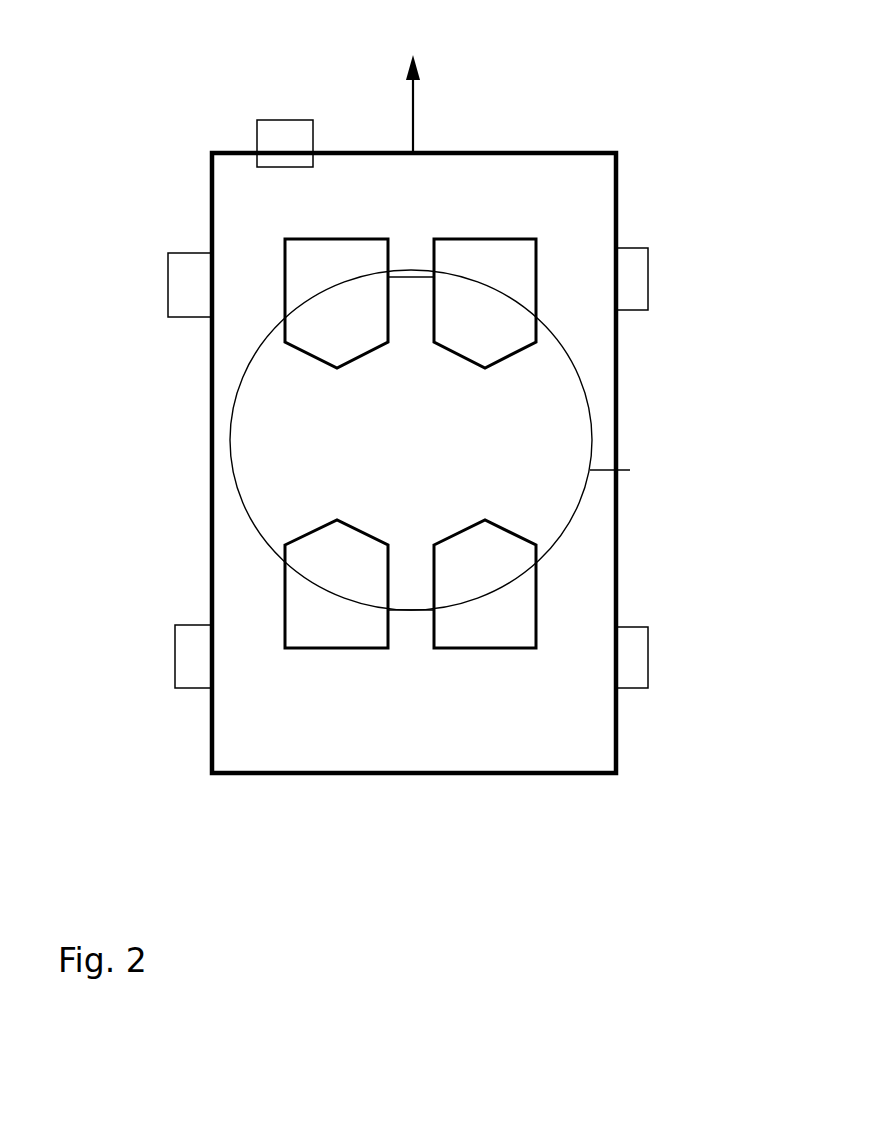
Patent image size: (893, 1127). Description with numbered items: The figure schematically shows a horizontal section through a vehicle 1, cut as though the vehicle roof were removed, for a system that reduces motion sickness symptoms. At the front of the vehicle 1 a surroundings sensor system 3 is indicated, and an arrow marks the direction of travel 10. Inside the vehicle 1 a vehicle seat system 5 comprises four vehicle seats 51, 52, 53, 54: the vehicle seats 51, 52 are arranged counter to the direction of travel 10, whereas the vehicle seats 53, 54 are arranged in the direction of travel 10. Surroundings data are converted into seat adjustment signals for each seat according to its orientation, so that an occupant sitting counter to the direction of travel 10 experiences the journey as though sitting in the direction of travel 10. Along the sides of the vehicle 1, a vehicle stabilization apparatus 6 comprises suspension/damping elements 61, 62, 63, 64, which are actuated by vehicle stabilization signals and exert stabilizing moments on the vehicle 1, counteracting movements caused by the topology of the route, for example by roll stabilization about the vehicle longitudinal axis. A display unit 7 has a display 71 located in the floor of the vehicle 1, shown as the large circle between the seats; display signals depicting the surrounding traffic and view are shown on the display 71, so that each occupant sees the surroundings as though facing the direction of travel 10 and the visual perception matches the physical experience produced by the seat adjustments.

The vehicle 1 is at (415, 773).
The surroundings sensor system 3 is at (287, 120).
The vehicle seat system 5 is at (600, 240).
The vehicle stabilization apparatus 6 is at (662, 346).
The display unit 7 is at (600, 530).
The direction of travel 10 is at (413, 80).
The vehicle seat 51 is at (315, 238).
The vehicle seat 52 is at (508, 238).
The vehicle seat 53 is at (362, 528).
The vehicle seat 54 is at (500, 527).
The suspension/damping element 61 is at (168, 290).
The suspension/damping element 62 is at (648, 277).
The suspension/damping element 63 is at (175, 640).
The suspension/damping element 64 is at (648, 666).
The display 71 is at (630, 470).